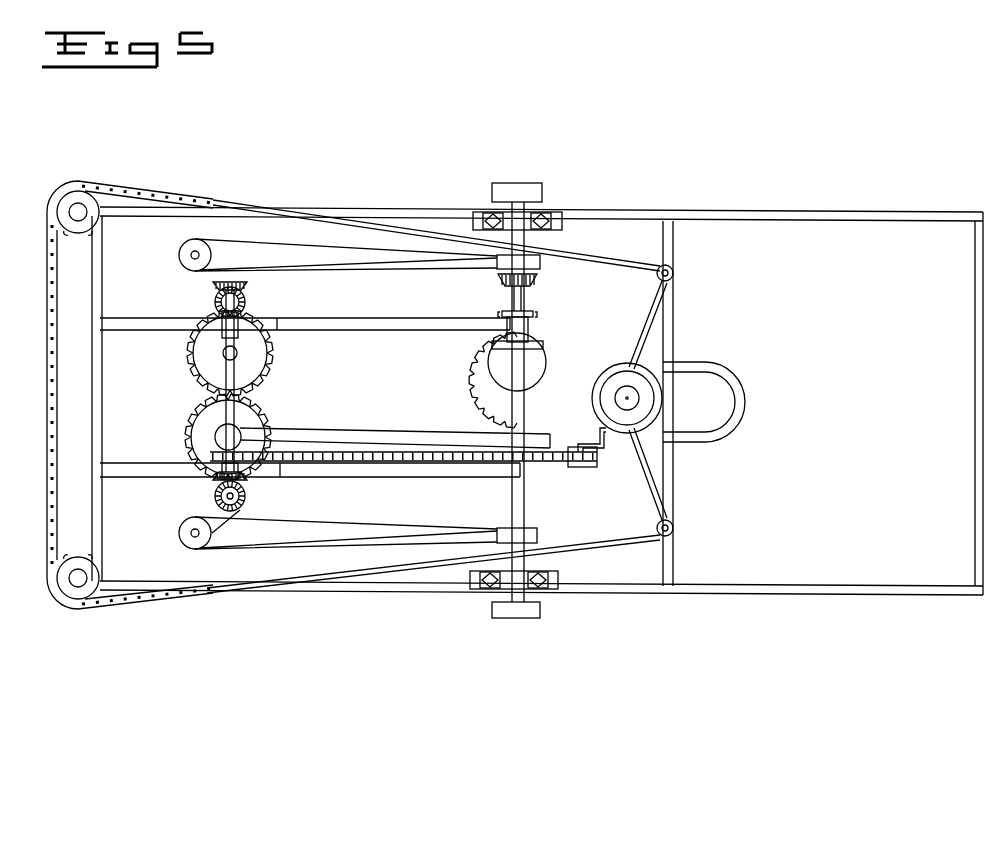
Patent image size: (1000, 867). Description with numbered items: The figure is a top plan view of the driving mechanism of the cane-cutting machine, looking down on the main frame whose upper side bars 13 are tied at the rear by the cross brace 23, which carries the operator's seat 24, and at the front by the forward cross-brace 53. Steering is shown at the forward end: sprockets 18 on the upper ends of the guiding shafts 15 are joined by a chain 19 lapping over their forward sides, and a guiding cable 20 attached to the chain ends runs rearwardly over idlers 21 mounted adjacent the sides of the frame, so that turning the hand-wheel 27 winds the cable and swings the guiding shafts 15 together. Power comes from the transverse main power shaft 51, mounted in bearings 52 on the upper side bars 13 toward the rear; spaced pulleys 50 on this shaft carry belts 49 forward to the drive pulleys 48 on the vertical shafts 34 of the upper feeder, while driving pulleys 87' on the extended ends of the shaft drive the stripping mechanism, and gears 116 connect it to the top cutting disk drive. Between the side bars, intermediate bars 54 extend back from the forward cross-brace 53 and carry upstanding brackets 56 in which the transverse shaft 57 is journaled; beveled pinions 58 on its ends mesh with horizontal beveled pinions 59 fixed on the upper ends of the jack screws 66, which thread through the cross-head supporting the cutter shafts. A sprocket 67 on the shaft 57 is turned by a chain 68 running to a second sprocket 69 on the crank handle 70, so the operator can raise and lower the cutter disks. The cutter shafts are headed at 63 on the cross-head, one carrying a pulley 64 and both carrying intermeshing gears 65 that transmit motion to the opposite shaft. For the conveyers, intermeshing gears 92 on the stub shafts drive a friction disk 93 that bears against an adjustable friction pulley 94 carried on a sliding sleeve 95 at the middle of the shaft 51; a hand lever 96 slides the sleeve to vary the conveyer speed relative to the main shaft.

The upper side bars 13 is at (375, 210).
The guiding shafts 15 is at (76, 213).
The sprockets 18 is at (111, 398).
The chain 19 is at (47, 493).
The guiding cable 20 is at (290, 206).
The idlers 21 is at (674, 273).
The cross brace 23 is at (674, 339).
The seat 24 is at (704, 402).
The hand-wheel 27 is at (610, 372).
The vertical shafts 34 is at (192, 256).
The drive pulleys 48 is at (187, 389).
The belts 49 is at (360, 256).
The pulleys 50 is at (541, 262).
The main power shaft 51 is at (526, 397).
The bearings 52 is at (530, 220).
The forward cross-brace 53 is at (103, 369).
The intermediate bars 54 is at (384, 333).
The brackets 56 is at (268, 326).
The transverse shaft 57 is at (236, 389).
The beveled pinions 58 is at (214, 287).
The beveled pinions 59 is at (246, 306).
The heads 63 is at (235, 353).
The pulley 64 is at (214, 437).
The intermeshing gears 65 is at (210, 370).
The jack screws 66 is at (246, 512).
The sprocket 67 is at (214, 449).
The chain 68 is at (556, 464).
The second sprocket 69 is at (596, 465).
The crank handle 70 is at (600, 432).
The driving pulleys 87' is at (521, 401).
The intermeshing gears 92 is at (490, 380).
The friction disk 93 is at (544, 362).
The friction pulley 94 is at (537, 342).
The sliding sleeve 95 is at (516, 334).
The hand lever 96 is at (503, 313).
The gears 116 is at (535, 283).